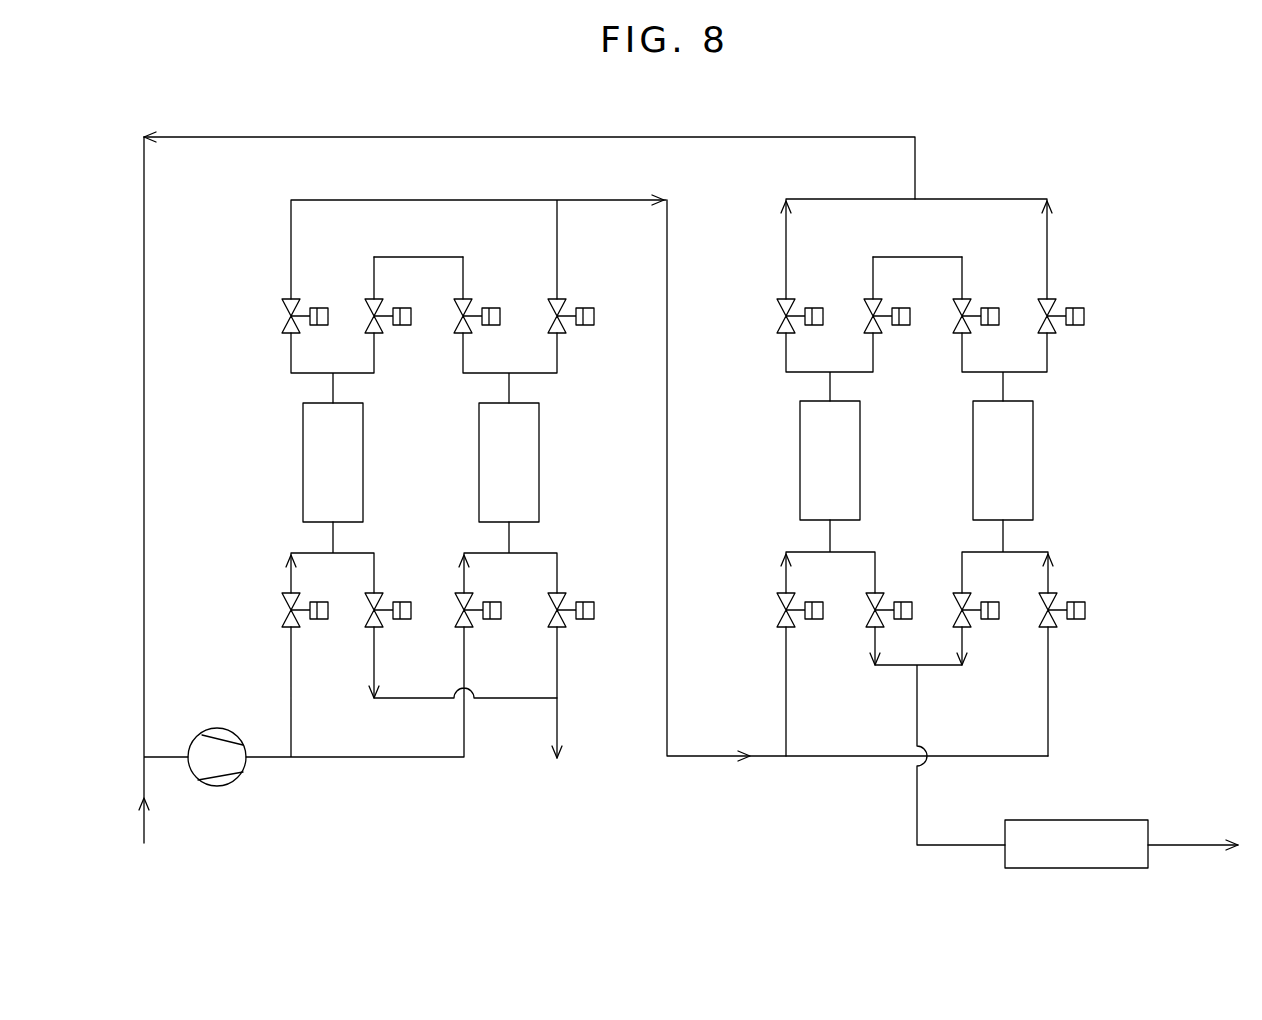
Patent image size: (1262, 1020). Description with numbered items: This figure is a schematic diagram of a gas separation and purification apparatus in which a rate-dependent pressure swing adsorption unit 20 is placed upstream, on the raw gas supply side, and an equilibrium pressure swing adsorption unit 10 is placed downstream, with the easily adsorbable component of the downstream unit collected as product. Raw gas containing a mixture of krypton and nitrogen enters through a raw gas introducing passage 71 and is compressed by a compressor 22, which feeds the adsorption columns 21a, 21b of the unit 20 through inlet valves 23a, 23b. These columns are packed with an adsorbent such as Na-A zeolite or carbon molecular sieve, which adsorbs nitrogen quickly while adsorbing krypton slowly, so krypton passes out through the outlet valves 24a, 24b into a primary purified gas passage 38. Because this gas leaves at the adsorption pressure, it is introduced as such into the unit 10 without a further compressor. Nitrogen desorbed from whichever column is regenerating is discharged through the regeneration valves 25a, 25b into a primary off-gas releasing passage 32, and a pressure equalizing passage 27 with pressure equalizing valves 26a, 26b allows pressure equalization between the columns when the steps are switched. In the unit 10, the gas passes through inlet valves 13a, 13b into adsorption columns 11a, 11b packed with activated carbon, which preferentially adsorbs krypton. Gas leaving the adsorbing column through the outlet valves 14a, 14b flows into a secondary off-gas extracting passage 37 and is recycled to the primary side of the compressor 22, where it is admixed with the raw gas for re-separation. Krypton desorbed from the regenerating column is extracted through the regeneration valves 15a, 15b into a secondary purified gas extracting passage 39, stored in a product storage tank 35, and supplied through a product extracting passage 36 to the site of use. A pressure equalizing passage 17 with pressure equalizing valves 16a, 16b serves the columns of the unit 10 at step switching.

The equilibrium pressure swing adsorption unit 10 is at (1072, 407).
The adsorption column 11a is at (800, 459).
The adsorption column 11b is at (1031, 472).
The inlet valve 13a is at (778, 601).
The inlet valve 13b is at (1057, 622).
The outlet valve 14a is at (778, 322).
The outlet valve 14b is at (1052, 310).
The regeneration valve 15a is at (868, 622).
The regeneration valve 15b is at (953, 620).
The pressure equalizing valve 16a is at (865, 307).
The pressure equalizing valve 16b is at (952, 318).
The pressure equalizing passage 17 is at (922, 257).
The rate-dependent pressure swing adsorption unit 20 is at (247, 420).
The adsorption column 21a is at (303, 461).
The adsorption column 21b is at (539, 468).
The compressor 22 is at (221, 728).
The inlet valve 23a is at (282, 620).
The inlet valve 23b is at (458, 623).
The outlet valve 24a is at (282, 322).
The outlet valve 24b is at (563, 310).
The regeneration valve 25a is at (368, 623).
The regeneration valve 25b is at (563, 623).
The pressure equalizing valve 26a is at (368, 307).
The pressure equalizing valve 26b is at (468, 307).
The pressure equalizing passage 27 is at (420, 257).
The primary off-gas releasing passage 32 is at (562, 722).
The product storage tank 35 is at (1107, 820).
The product extracting passage 36 is at (1188, 843).
The secondary off-gas extracting passage 37 is at (338, 139).
The primary purified gas passage 38 is at (668, 259).
The secondary purified gas extracting passage 39 is at (917, 812).
The raw gas introducing passage 71 is at (146, 830).